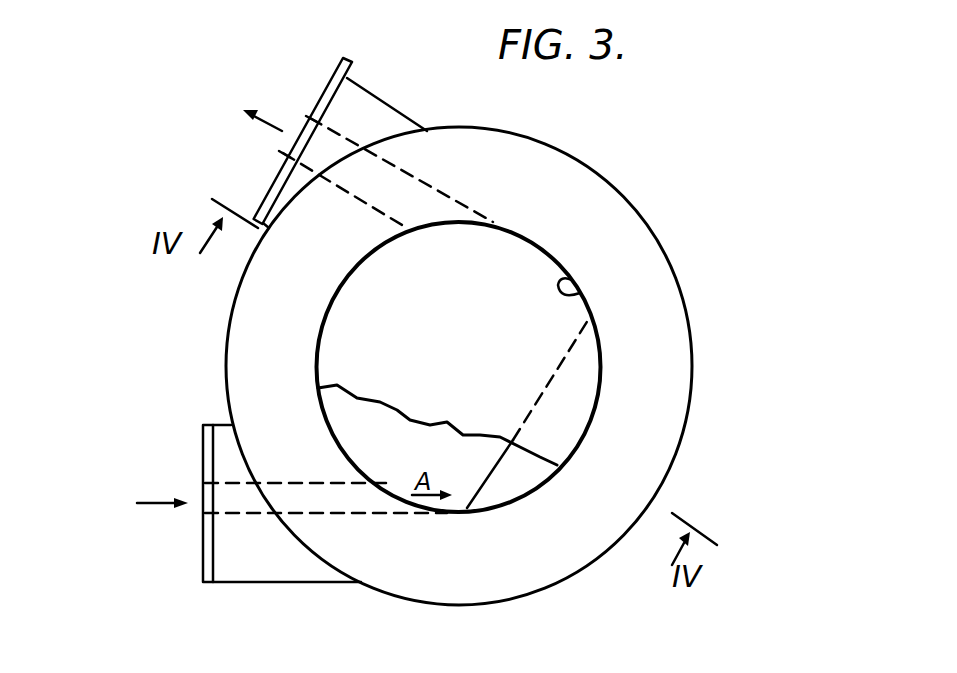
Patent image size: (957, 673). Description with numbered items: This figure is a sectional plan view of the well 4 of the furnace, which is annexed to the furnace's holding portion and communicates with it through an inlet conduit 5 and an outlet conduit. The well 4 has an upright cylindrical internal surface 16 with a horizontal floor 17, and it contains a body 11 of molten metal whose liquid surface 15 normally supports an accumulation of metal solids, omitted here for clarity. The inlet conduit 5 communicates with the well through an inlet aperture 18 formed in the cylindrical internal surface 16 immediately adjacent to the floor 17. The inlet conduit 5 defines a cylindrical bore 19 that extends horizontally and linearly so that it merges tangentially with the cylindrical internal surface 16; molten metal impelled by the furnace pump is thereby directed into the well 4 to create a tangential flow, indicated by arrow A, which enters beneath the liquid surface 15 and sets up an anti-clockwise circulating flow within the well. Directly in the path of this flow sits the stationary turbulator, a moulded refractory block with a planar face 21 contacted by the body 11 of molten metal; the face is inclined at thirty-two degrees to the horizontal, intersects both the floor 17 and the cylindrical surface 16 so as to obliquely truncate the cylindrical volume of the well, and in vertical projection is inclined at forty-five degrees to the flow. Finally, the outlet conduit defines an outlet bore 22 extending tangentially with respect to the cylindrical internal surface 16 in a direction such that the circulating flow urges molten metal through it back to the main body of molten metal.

The well 4 is at (692, 375).
The inlet conduit 5 is at (225, 573).
The body of molten metal 11 is at (365, 297).
The liquid surface 15 is at (535, 263).
The cylindrical internal surface 16 is at (580, 293).
The floor 17 is at (347, 412).
The inlet aperture 18 is at (388, 496).
The cylindrical bore 19 is at (258, 508).
The planar face 21 is at (502, 492).
The outlet bore 22 is at (372, 137).